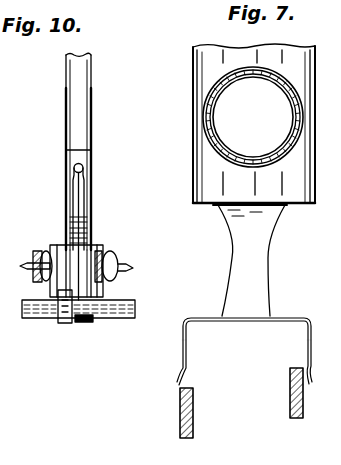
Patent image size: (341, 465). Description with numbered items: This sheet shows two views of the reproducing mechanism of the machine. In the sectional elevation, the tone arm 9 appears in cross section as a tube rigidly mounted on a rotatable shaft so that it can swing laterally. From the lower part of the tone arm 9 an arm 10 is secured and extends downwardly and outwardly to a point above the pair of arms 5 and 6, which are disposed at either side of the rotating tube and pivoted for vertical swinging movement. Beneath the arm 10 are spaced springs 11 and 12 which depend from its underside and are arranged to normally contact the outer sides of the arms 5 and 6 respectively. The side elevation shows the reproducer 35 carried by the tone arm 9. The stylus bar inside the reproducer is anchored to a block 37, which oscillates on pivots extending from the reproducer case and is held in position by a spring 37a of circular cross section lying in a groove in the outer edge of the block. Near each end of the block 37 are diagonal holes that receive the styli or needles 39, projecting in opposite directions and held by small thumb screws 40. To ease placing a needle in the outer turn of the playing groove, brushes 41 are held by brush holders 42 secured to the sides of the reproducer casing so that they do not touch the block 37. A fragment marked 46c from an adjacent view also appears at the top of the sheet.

In FIG. 7, the arm 5 is at (291, 400).
In FIG. 7, the arm 6 is at (180, 420).
In FIG. 10, the tone arm 9 is at (78, 68).
In FIG. 7, the tone arm 9 is at (208, 118).
In FIG. 7, the arm 10 is at (252, 261).
In FIG. 7, the spring 11 is at (311, 350).
In FIG. 7, the spring 12 is at (183, 358).
In FIG. 10, the reproducer 35 is at (91, 150).
In FIG. 10, the block 37 is at (59, 312).
In FIG. 10, the spring 37a is at (90, 223).
In FIG. 10, the styli or needles 39 is at (28, 262).
In FIG. 10, the thumb screws 40 is at (43, 253).
In FIG. 10, the brushes 41 is at (118, 318).
In FIG. 10, the brush holders 42 is at (80, 323).
In FIG. 10, the member 46c is at (121, 0).